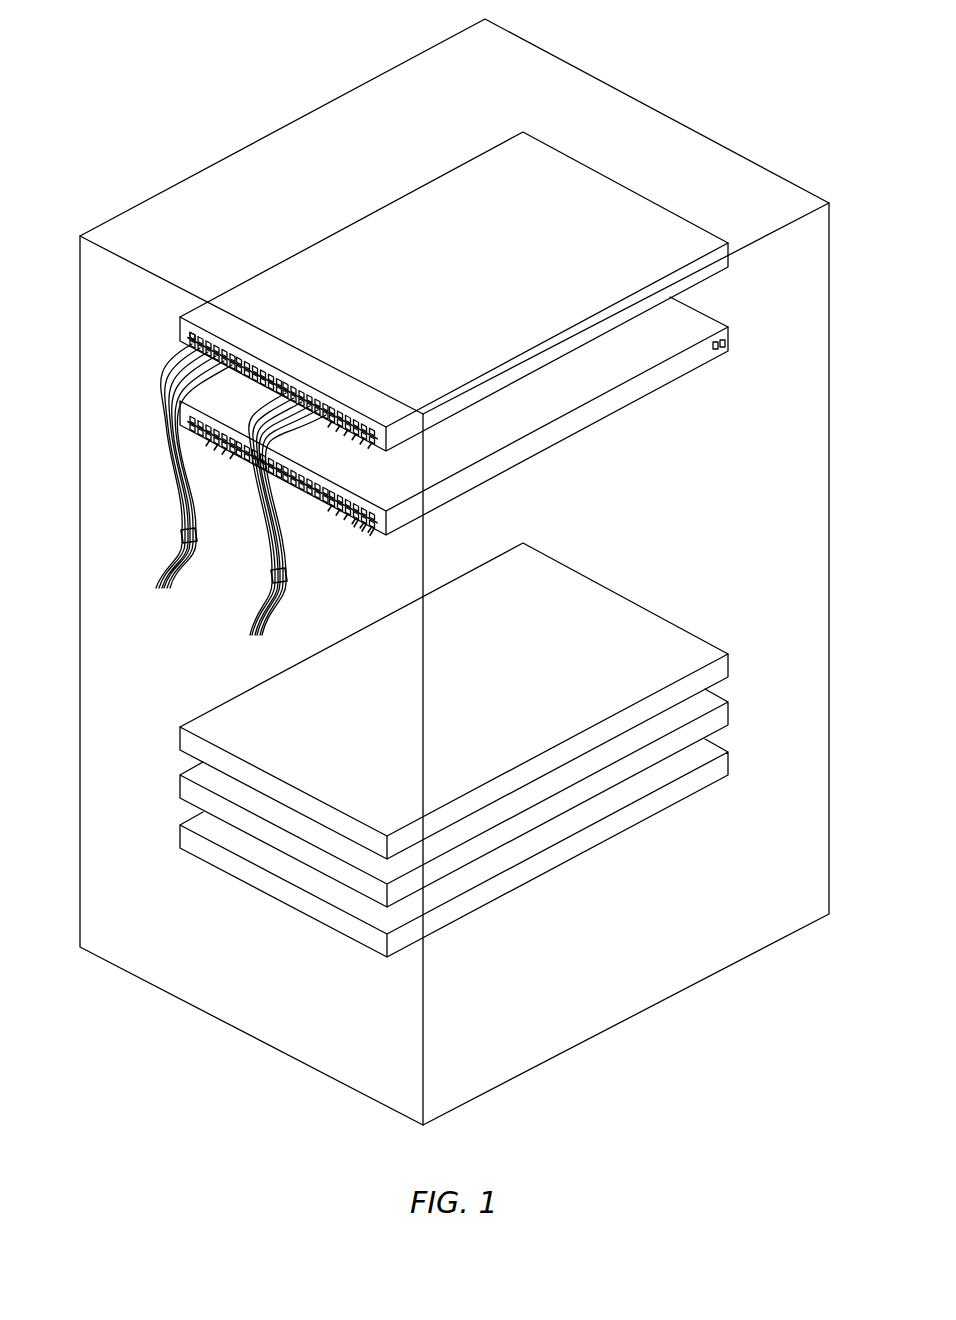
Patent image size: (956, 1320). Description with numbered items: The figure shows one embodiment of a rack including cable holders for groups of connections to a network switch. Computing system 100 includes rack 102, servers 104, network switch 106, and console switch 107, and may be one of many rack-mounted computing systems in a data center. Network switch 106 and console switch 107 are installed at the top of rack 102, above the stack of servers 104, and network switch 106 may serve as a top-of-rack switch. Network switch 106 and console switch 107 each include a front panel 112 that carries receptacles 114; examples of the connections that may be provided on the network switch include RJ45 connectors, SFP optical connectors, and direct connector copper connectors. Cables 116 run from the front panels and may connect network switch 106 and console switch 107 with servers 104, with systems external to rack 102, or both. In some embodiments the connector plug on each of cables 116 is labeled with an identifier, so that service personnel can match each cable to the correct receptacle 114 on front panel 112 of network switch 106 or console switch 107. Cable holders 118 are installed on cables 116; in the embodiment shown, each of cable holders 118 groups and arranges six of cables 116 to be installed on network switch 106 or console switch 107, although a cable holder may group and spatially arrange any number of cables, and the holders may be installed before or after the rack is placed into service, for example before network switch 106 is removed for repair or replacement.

The computing system 100 is at (688, 88).
The rack 102 is at (398, 1065).
The servers 104 is at (277, 739).
The network switch 106 is at (489, 361).
The console switch 107 is at (497, 438).
The front panel 112 is at (382, 440).
The receptacles 114 is at (182, 332).
The cables 116 is at (353, 527).
The cable holders 118 is at (372, 527).